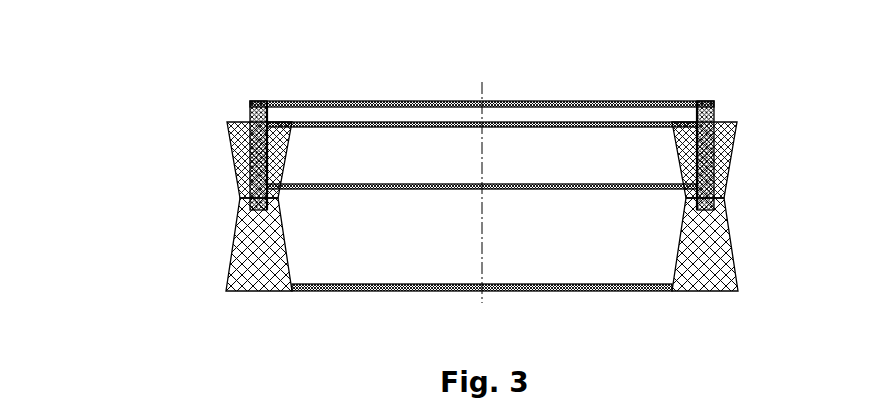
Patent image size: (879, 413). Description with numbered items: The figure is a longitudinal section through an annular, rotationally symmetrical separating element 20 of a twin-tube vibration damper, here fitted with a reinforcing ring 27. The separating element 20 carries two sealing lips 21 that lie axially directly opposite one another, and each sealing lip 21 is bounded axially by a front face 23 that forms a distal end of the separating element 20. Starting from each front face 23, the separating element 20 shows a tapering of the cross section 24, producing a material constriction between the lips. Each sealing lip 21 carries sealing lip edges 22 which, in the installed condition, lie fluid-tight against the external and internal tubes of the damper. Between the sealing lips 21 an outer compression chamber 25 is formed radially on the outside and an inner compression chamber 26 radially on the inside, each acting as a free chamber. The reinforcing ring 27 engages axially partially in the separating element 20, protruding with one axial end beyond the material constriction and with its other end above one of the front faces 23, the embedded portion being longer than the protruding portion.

The separating element 20 is at (762, 71).
The sealing lip 21 is at (733, 243).
The sealing lip edge 22 is at (481, 196).
The front face 23 is at (245, 98).
The tapering of the cross section 24 is at (238, 192).
The outer compression chamber 25 is at (238, 202).
The inner compression chamber 26 is at (300, 183).
The reinforcing ring 27 is at (528, 99).